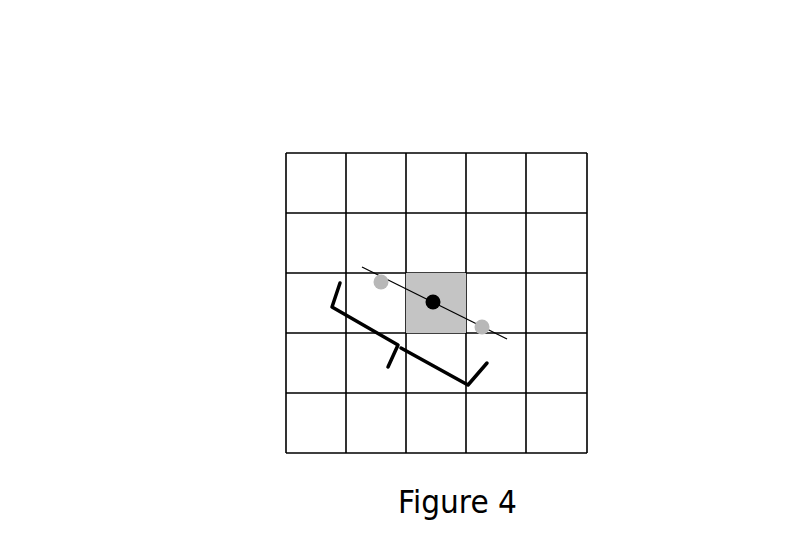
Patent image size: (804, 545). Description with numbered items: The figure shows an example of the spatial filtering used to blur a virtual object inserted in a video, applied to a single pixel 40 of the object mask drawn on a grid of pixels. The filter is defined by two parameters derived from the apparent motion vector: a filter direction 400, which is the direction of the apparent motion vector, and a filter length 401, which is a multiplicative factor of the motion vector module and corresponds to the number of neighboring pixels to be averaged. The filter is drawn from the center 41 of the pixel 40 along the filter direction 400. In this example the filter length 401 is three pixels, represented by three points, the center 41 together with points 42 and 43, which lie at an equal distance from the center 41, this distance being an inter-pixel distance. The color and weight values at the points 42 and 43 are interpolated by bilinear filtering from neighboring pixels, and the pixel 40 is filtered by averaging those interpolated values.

The pixel 40 is at (432, 283).
The center 41 is at (433, 302).
The point 42 is at (484, 325).
The point 43 is at (381, 278).
The filter direction 400 is at (395, 283).
The filter length 401 is at (388, 367).